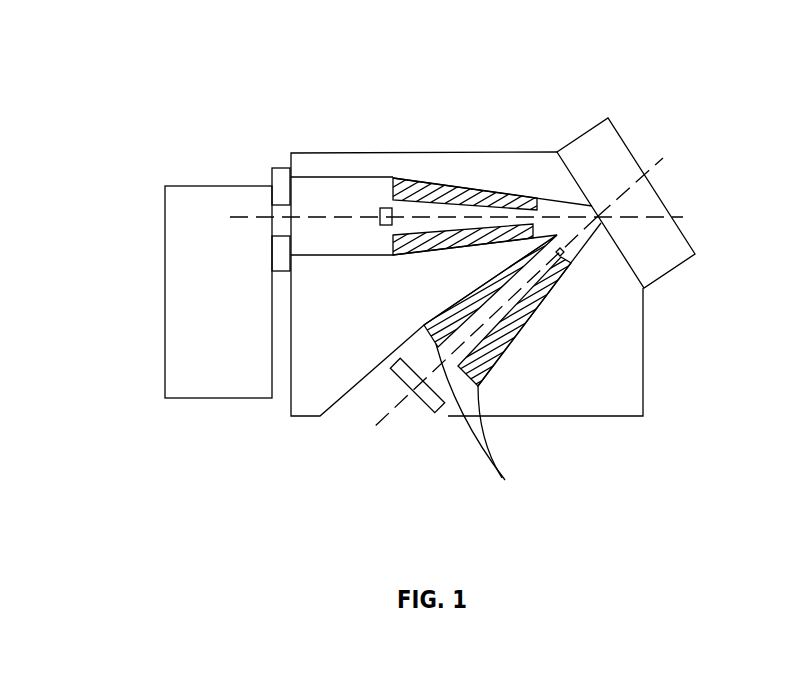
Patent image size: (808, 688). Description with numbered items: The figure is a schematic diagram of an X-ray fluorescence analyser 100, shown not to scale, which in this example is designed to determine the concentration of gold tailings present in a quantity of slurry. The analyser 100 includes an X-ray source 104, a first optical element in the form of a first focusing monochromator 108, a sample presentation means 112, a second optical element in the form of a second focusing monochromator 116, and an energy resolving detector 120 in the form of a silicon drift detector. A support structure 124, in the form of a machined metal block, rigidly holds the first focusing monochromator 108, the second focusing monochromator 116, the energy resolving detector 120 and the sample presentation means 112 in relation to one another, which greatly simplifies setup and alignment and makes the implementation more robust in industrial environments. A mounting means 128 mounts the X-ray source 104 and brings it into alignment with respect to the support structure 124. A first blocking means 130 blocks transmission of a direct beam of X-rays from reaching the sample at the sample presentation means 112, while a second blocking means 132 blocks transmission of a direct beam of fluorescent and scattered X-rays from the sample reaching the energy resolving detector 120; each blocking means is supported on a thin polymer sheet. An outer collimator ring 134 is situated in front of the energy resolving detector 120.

The X-ray fluorescence analyser 100 is at (672, 90).
The X-ray source 104 is at (165, 205).
The first focusing monochromator 108 is at (410, 177).
The sample presentation means 112 is at (687, 237).
The second focusing monochromator 116 is at (503, 356).
The energy resolving detector 120 is at (419, 400).
The support structure 124 is at (467, 284).
The mounting means 128 is at (278, 168).
The first blocking means 130 is at (380, 207).
The second blocking means 132 is at (563, 256).
The outer collimator ring 134 is at (489, 429).